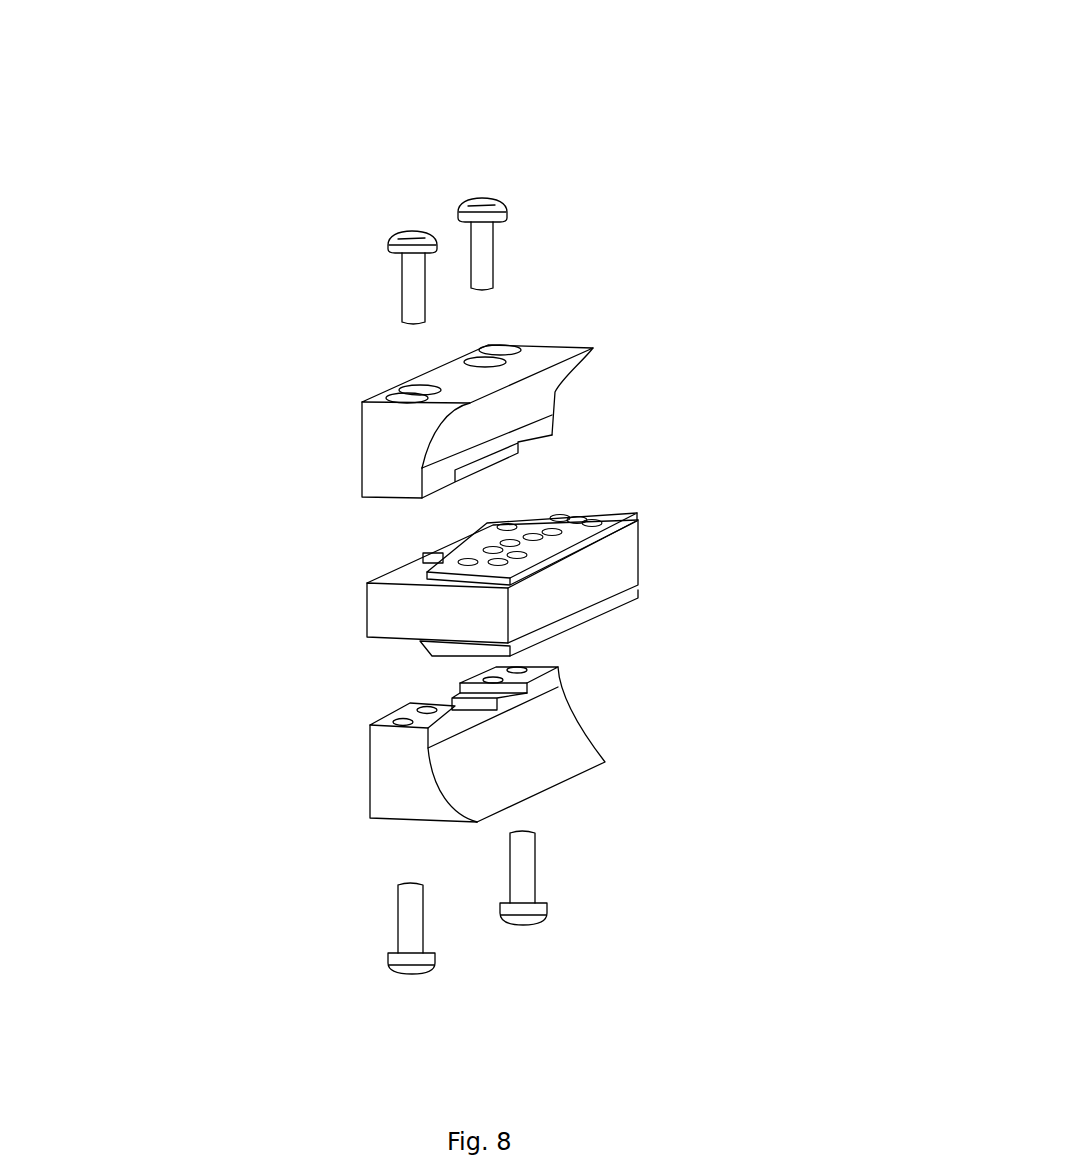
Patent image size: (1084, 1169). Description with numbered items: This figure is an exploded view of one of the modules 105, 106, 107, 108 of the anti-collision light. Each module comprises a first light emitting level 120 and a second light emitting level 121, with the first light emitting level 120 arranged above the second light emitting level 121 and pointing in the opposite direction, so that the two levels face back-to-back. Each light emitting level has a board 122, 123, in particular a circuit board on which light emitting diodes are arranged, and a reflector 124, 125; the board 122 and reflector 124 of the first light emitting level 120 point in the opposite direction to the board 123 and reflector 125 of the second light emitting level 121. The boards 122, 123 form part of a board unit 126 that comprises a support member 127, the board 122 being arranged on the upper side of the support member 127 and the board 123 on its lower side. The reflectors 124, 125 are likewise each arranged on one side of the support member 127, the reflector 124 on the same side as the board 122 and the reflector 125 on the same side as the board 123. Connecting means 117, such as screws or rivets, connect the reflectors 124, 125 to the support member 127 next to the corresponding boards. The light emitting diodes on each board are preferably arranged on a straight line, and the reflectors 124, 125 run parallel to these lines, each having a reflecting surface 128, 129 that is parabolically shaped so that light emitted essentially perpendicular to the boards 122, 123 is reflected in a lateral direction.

The module 105 is at (500, 501).
The module 106 is at (500, 501).
The module 107 is at (500, 501).
The module 108 is at (825, 50).
The connecting means 117 is at (390, 234).
The first light emitting level 120 is at (713, 540).
The second light emitting level 121 is at (722, 955).
The board 122 is at (388, 573).
The board 123 is at (418, 652).
The reflector 124 is at (362, 451).
The reflector 125 is at (370, 773).
The board unit 126 is at (270, 600).
The support member 127 is at (363, 627).
The reflecting surface 128 is at (522, 423).
The reflecting surface 129 is at (535, 768).